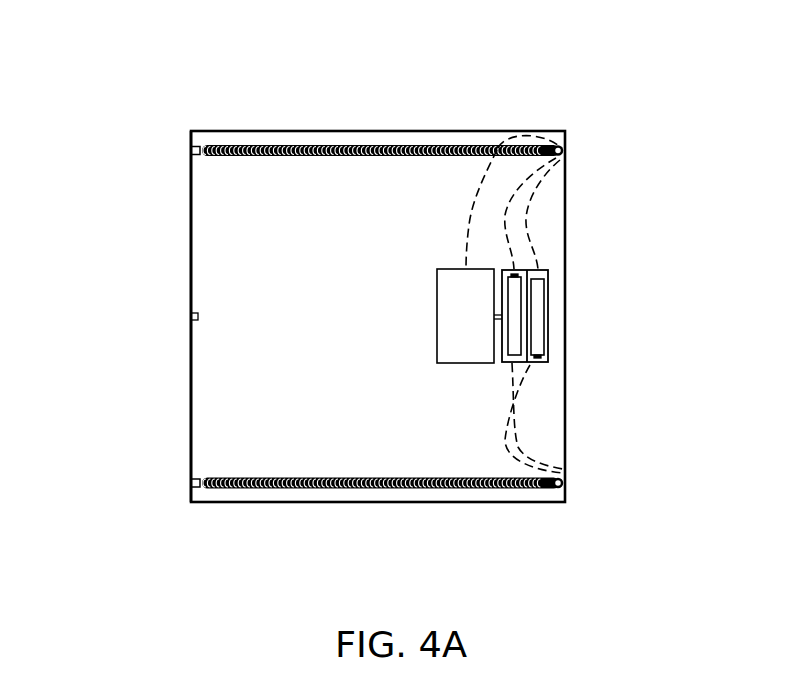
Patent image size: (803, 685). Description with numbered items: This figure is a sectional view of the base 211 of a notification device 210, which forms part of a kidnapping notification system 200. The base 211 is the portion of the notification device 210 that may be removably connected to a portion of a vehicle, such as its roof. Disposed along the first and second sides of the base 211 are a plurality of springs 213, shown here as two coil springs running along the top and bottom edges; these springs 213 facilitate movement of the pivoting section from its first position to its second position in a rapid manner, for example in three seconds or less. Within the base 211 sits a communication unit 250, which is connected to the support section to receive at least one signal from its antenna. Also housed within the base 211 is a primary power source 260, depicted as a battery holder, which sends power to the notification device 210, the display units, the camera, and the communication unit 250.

The kidnapping notification system 200 is at (138, 101).
The notification device 210 is at (168, 383).
The base 211 is at (210, 238).
The plurality of springs 213 is at (565, 150).
The communication unit 250 is at (452, 282).
The primary power source 260 is at (545, 274).